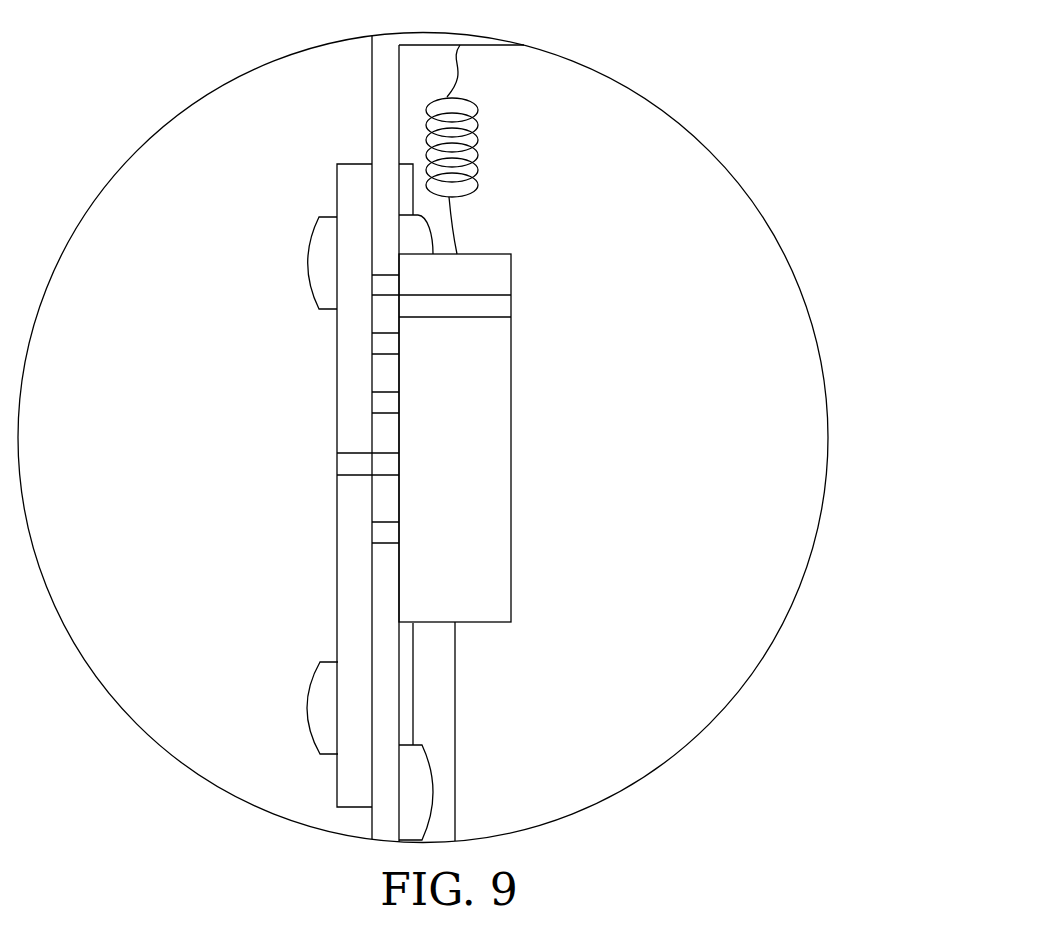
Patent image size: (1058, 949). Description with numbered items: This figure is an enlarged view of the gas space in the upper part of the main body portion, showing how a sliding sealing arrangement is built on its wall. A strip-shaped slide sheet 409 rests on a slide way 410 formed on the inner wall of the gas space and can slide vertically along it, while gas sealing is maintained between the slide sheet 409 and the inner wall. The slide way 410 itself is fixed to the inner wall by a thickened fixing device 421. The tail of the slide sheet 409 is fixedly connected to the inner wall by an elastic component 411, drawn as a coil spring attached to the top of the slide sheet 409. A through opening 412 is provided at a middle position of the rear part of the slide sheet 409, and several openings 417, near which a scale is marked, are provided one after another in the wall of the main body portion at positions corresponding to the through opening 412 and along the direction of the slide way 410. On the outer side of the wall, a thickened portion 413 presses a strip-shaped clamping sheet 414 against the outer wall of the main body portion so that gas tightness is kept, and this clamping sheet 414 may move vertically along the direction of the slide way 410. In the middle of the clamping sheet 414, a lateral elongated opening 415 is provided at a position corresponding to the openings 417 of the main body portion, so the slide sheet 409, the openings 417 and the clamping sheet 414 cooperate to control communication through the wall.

The strip-shaped slide sheet 409 is at (462, 498).
The slide way 410 is at (405, 700).
The elastic component 411 is at (452, 155).
The through opening 412 is at (483, 308).
The thickened portion 413 is at (330, 708).
The strip-shaped clamping sheet 414 is at (355, 570).
The lateral elongated opening 415 is at (355, 465).
The openings 417 is at (385, 407).
The thickened fixing device 421 is at (414, 809).